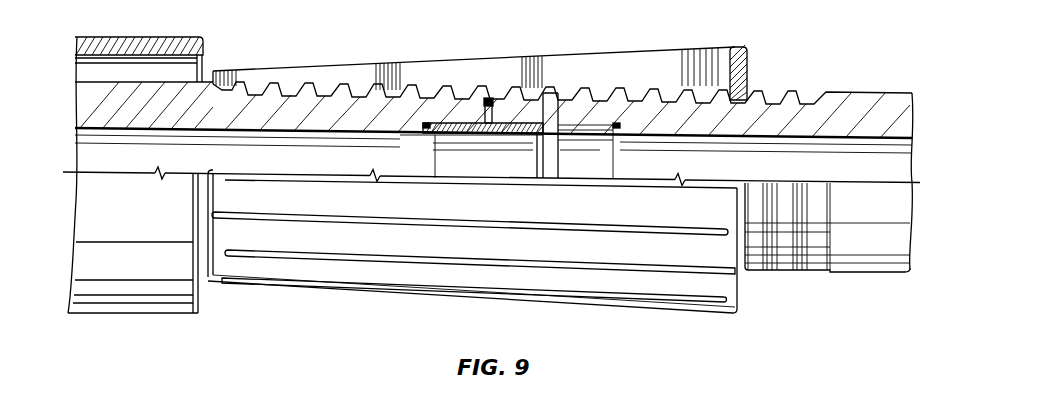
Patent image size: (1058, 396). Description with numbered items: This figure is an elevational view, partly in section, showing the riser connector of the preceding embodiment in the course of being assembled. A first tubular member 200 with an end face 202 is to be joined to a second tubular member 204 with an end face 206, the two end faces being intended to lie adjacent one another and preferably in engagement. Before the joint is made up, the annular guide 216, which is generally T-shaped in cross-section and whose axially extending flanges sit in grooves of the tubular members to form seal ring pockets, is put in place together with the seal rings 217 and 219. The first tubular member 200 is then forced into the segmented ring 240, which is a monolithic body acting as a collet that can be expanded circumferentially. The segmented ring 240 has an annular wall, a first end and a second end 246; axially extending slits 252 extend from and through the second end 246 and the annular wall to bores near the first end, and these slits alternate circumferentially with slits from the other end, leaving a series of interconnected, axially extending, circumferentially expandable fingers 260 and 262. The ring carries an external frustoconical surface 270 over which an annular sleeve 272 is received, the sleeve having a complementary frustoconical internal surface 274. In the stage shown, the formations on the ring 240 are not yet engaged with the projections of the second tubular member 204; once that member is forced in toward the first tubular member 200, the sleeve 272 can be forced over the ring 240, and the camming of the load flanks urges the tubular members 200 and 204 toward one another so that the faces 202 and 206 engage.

The first tubular member 200 is at (122, 76).
The end face 202 is at (549, 118).
The second tubular member 204 is at (877, 80).
The end face 206 is at (553, 110).
The annular guide 216 is at (489, 142).
The seal ring 217 is at (398, 132).
The seal ring 219 is at (628, 128).
The segmented ring 240 is at (693, 44).
The second end 246 is at (287, 278).
The slits 252 is at (708, 270).
The fingers 260 is at (270, 228).
The fingers 262 is at (270, 192).
The external frustoconical surface 270 is at (600, 53).
The annular sleeve 272 is at (197, 22).
The internal surface 274 is at (172, 56).